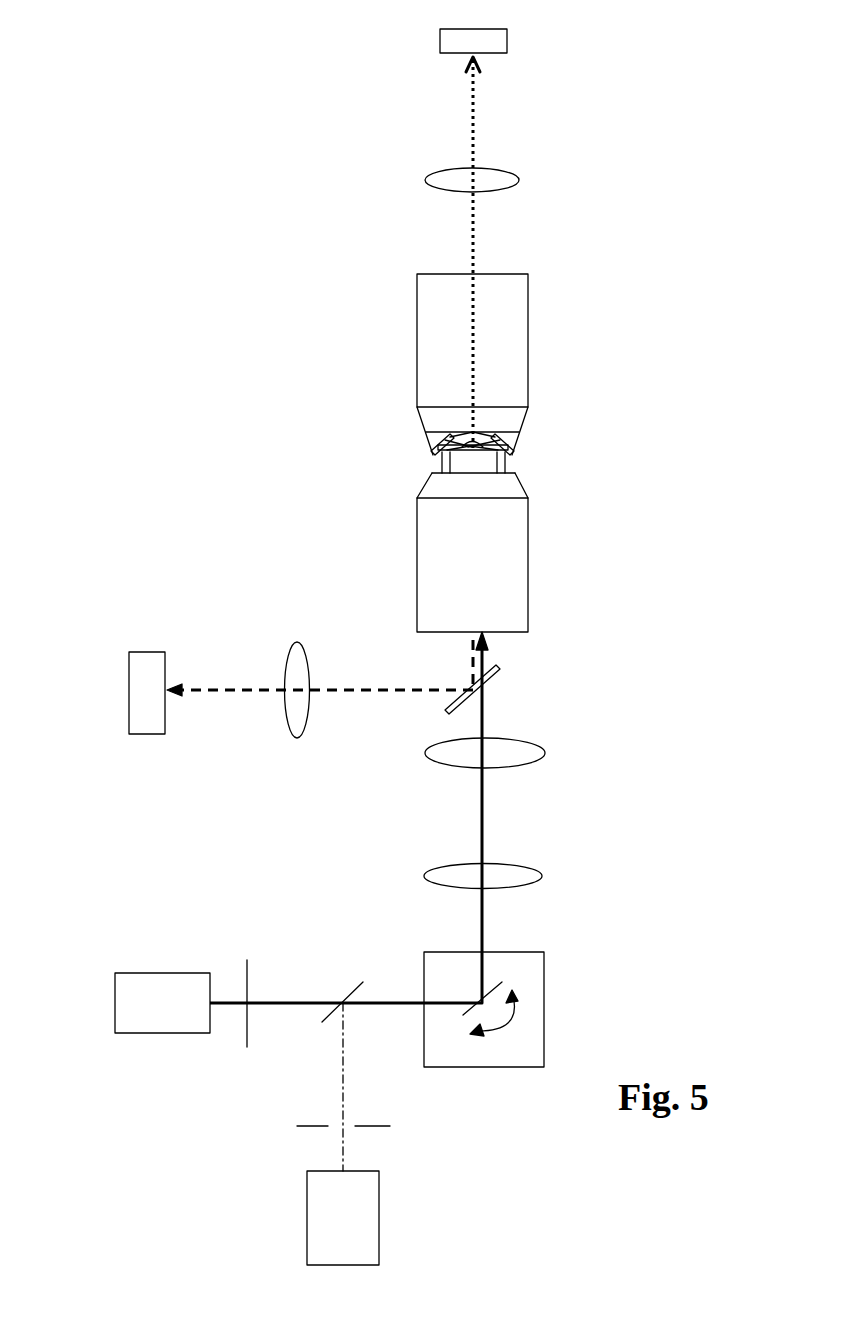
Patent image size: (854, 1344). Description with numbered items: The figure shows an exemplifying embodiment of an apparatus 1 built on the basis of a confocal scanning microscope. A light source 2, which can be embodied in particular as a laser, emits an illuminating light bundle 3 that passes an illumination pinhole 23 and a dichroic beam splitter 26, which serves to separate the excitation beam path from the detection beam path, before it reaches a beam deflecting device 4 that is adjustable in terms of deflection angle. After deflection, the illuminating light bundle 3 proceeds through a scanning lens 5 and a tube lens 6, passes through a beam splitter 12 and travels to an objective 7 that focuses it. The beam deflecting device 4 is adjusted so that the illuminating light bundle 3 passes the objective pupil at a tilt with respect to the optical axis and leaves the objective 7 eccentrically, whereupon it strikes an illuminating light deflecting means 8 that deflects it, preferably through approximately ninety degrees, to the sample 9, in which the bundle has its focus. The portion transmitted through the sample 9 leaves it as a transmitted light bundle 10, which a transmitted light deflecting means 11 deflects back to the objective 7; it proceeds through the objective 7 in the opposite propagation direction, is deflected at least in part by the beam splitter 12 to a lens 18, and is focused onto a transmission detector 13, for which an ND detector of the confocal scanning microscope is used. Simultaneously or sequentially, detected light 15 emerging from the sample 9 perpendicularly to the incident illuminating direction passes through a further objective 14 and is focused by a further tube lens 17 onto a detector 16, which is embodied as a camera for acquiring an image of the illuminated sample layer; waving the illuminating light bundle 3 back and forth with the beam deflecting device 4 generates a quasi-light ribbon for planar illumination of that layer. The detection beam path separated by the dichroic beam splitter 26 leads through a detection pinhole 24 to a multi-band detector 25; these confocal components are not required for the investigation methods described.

The apparatus 1 is at (108, 170).
The light source 2 is at (185, 1000).
The illuminating light bundle 3 is at (483, 710).
The beam deflecting device 4 is at (520, 960).
The scanning lens 5 is at (445, 875).
The tube lens 6 is at (453, 755).
The objective 7 is at (430, 564).
The illuminating light deflecting means 8 is at (513, 450).
The sample 9 is at (465, 453).
The transmitted light bundle 10 is at (362, 690).
The transmitted light deflecting means 11 is at (430, 448).
The beam splitter 12 is at (495, 677).
The transmission detector 13 is at (156, 668).
The further objective 14 is at (520, 360).
The detected light 15 is at (473, 232).
The detector 16 is at (492, 44).
The further tube lens 17 is at (490, 177).
The lens 18 is at (293, 668).
The illumination pinhole 23 is at (258, 1017).
The detection pinhole 24 is at (319, 1138).
The multi-band detector 25 is at (367, 1198).
The dichroic beam splitter 26 is at (363, 980).